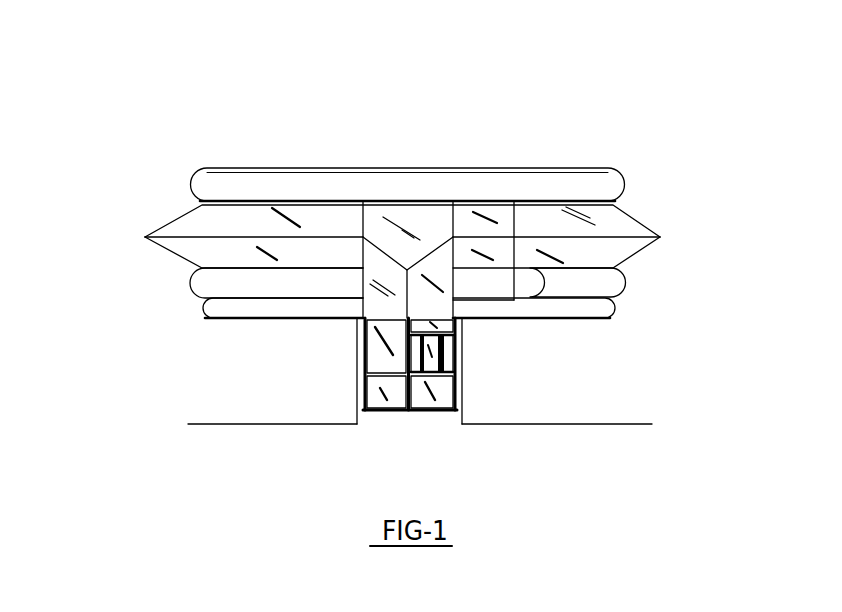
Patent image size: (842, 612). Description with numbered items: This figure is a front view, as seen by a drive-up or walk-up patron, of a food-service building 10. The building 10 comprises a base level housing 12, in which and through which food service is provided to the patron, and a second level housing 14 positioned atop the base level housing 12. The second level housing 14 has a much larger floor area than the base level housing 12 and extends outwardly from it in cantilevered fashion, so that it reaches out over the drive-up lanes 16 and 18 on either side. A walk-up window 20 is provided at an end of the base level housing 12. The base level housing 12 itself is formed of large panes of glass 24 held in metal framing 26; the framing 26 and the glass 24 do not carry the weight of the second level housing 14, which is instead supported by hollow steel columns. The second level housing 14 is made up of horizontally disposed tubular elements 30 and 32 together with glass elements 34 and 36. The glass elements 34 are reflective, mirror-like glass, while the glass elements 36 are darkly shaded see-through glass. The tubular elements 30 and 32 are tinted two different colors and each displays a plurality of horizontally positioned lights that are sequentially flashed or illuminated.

The building 10 is at (543, 118).
The base level housing 12 is at (490, 391).
The second level housing 14 is at (691, 221).
The drive-up lane 16 is at (232, 424).
The drive-up lane 18 is at (617, 423).
The walk-up window 20 is at (447, 352).
The panes of glass 24 is at (380, 360).
The metal framing 26 is at (353, 333).
The tubular element 30 is at (608, 182).
The tubular element 32 is at (613, 281).
The glass element 34 is at (620, 222).
The glass element 36 is at (622, 253).